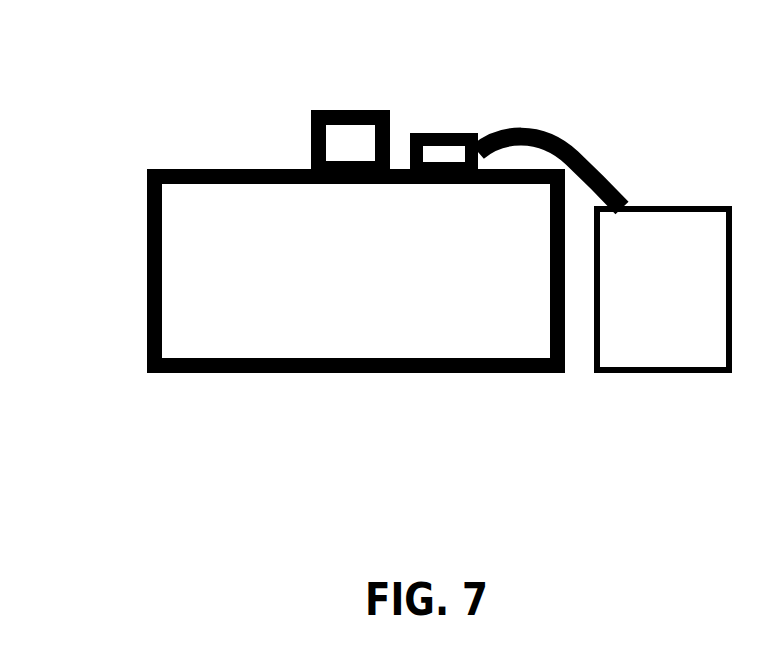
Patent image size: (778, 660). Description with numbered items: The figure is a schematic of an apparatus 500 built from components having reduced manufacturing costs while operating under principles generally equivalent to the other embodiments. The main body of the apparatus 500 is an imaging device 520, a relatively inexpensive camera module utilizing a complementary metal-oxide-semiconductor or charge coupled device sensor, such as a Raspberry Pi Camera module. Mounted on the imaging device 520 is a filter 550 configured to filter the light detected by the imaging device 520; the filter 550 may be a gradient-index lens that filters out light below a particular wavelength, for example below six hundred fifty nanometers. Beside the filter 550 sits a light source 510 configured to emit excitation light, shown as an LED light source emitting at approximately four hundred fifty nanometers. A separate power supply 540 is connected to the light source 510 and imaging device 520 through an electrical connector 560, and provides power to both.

The apparatus 500 is at (149, 91).
The light source 510 is at (460, 133).
The imaging device 520 is at (147, 312).
The power supply 540 is at (673, 373).
The filter 550 is at (330, 110).
The electrical connector 560 is at (603, 158).